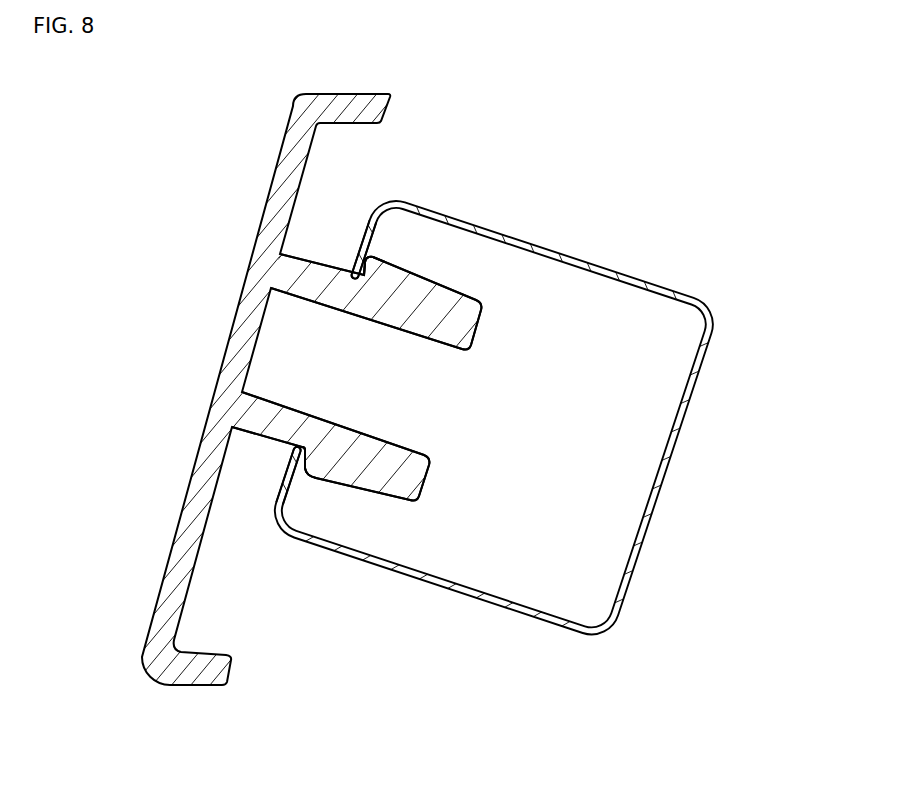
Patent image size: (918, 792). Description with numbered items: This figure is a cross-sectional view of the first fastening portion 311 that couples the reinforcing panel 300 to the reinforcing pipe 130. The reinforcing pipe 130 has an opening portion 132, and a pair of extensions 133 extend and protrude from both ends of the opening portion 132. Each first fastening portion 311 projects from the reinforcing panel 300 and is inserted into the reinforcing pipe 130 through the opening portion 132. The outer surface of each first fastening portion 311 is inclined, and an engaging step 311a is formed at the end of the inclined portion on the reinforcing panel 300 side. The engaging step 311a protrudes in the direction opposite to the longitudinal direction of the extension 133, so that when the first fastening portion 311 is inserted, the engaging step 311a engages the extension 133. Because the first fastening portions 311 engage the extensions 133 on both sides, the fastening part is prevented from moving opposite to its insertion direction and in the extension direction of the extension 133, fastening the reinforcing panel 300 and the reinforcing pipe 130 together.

The reinforcing panel 300 is at (190, 367).
The reinforcing pipe 130 is at (693, 268).
The opening portion 132 is at (286, 339).
The extension 133 is at (362, 250).
The first fastening portion 311 is at (477, 330).
The engaging step 311a is at (393, 267).